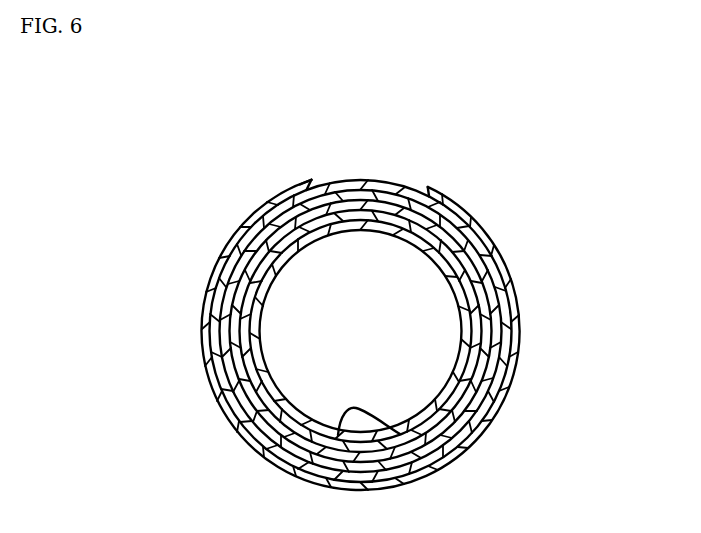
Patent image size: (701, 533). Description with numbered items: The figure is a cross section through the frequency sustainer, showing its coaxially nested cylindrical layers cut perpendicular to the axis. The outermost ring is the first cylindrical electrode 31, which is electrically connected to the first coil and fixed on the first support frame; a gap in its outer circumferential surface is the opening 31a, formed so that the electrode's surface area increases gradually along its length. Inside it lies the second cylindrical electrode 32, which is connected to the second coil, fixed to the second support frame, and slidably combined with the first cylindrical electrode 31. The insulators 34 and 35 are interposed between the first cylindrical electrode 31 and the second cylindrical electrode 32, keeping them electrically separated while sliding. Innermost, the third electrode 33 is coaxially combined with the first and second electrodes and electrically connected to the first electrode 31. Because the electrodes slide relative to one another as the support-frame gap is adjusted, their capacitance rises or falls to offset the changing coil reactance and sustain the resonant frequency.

The first cylindrical electrode 31 is at (522, 322).
The opening 31a is at (328, 177).
The second cylindrical electrode 32 is at (230, 418).
The third electrode 33 is at (447, 458).
The insulator 34 is at (213, 297).
The insulator 35 is at (243, 344).